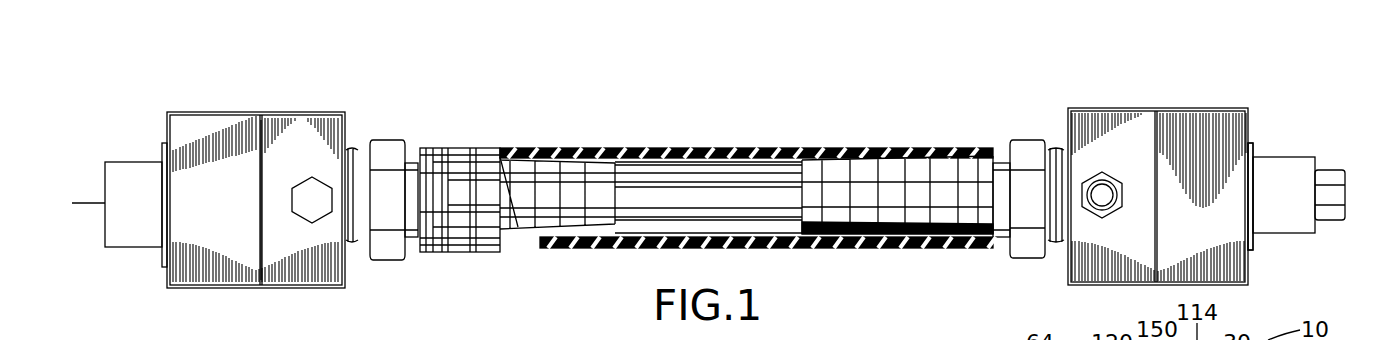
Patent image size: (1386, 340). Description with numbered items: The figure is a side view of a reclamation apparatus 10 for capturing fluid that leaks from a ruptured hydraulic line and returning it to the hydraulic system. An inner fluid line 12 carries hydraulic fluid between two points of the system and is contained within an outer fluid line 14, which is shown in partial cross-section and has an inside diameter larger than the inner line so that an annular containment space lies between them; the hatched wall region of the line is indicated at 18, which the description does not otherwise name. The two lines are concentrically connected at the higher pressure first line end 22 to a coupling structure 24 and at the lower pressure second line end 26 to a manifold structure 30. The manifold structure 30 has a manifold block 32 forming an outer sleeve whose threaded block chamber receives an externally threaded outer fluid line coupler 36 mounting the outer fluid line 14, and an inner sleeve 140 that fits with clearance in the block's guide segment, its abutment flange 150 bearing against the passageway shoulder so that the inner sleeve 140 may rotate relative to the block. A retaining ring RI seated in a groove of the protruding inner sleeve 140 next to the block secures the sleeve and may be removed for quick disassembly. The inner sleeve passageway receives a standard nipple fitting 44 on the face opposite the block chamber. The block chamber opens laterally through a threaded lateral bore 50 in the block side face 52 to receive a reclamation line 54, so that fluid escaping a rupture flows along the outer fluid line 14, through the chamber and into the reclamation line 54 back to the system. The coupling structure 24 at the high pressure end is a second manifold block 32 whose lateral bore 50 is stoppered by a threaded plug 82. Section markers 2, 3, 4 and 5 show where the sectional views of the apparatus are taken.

The reclamation apparatus 10 is at (1230, 102).
The inner fluid line 12 is at (708, 202).
The outer fluid line 14 is at (740, 148).
The hose inner tube 18 is at (762, 163).
The first line end 22 is at (503, 253).
The coupling structure 24 is at (327, 113).
The second line end 26 is at (937, 250).
The manifold structure 30 is at (1200, 108).
The manifold block 32 is at (348, 134).
The outer fluid line coupler 36 is at (397, 152).
The nipple fitting 44 is at (1336, 172).
The lateral bore 50 is at (1105, 190).
The side face 52 is at (320, 160).
The reclamation line 54 is at (1100, 217).
The threaded plug 82 is at (306, 215).
The inner sleeve 140 is at (107, 247).
The abutment flange 150 is at (315, 339).
The section line 2 is at (77, 232).
The section line 3 is at (158, 87).
The section line 4 is at (234, 87).
The section line 5 is at (286, 63).
The retaining ring RI is at (163, 150).